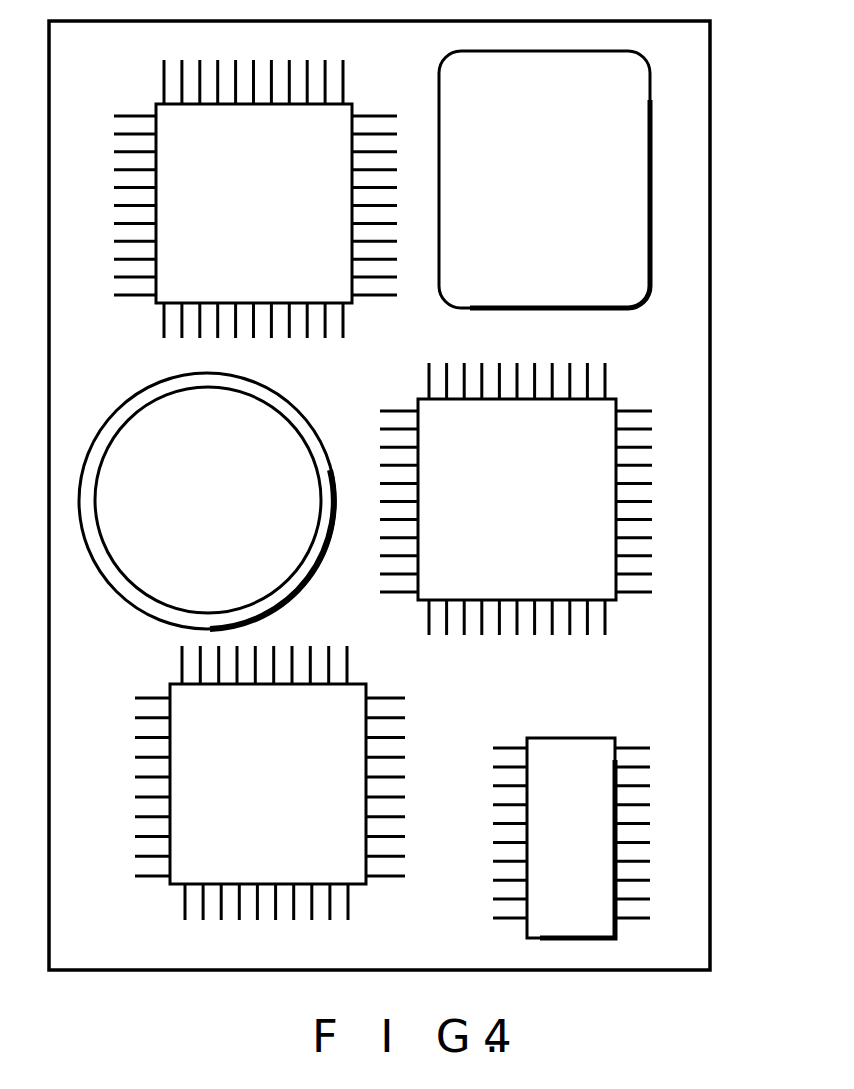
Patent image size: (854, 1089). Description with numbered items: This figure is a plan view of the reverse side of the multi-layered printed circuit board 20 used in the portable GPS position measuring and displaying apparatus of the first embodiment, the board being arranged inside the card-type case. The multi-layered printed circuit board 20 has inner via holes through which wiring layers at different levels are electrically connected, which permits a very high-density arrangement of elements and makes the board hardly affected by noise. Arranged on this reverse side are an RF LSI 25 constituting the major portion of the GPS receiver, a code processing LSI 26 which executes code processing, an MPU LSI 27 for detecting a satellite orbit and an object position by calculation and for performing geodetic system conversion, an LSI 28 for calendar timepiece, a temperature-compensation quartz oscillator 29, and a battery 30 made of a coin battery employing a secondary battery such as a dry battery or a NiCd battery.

The multi-layered printed circuit board 20 is at (717, 407).
The RF LSI 25 is at (173, 297).
The code processing LSI 26 is at (605, 577).
The MPU LSI 27 is at (185, 875).
The LSI for calendar timepiece 28 is at (532, 898).
The temperature-compensation quartz oscillator 29 is at (630, 284).
The battery 30 is at (307, 422).